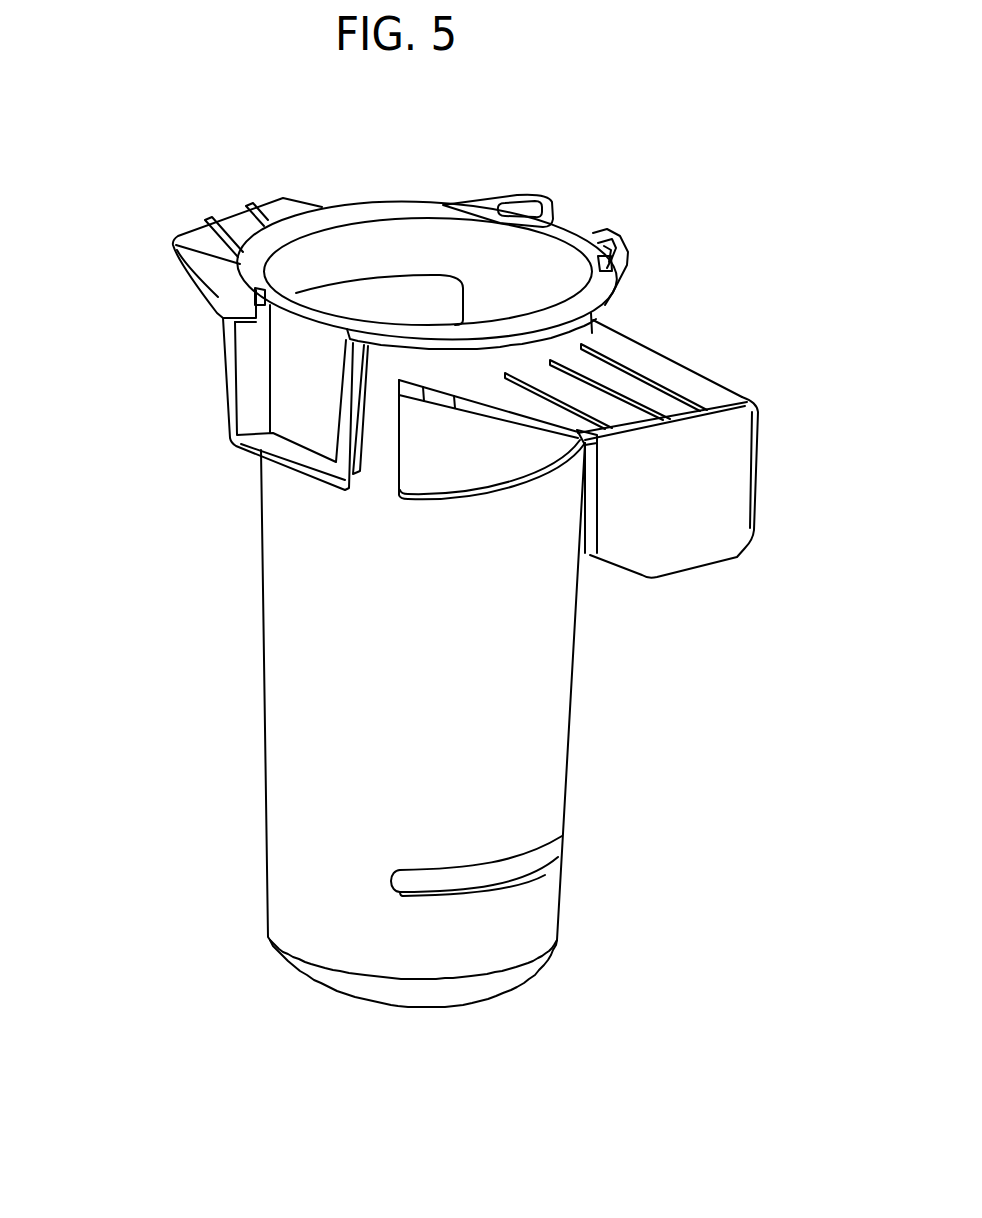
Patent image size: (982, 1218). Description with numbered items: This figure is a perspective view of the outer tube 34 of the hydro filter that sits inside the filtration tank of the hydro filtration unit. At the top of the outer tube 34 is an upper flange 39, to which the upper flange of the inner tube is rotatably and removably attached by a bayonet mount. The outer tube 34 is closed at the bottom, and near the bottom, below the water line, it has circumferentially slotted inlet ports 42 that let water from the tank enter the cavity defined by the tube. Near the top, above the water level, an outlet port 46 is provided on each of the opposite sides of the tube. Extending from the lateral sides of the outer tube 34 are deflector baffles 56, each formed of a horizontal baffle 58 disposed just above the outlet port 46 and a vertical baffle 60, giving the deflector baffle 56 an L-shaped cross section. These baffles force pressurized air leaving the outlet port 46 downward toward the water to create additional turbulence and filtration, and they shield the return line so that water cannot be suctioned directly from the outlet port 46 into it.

The outer tube 34 is at (172, 361).
The upper flange 39 is at (402, 206).
The circumferentially slotted inlet port 42 is at (550, 853).
The outlet port 46 is at (458, 467).
The deflector baffle 56 is at (745, 364).
The horizontal baffle 58 is at (637, 383).
The vertical baffle 60 is at (727, 494).